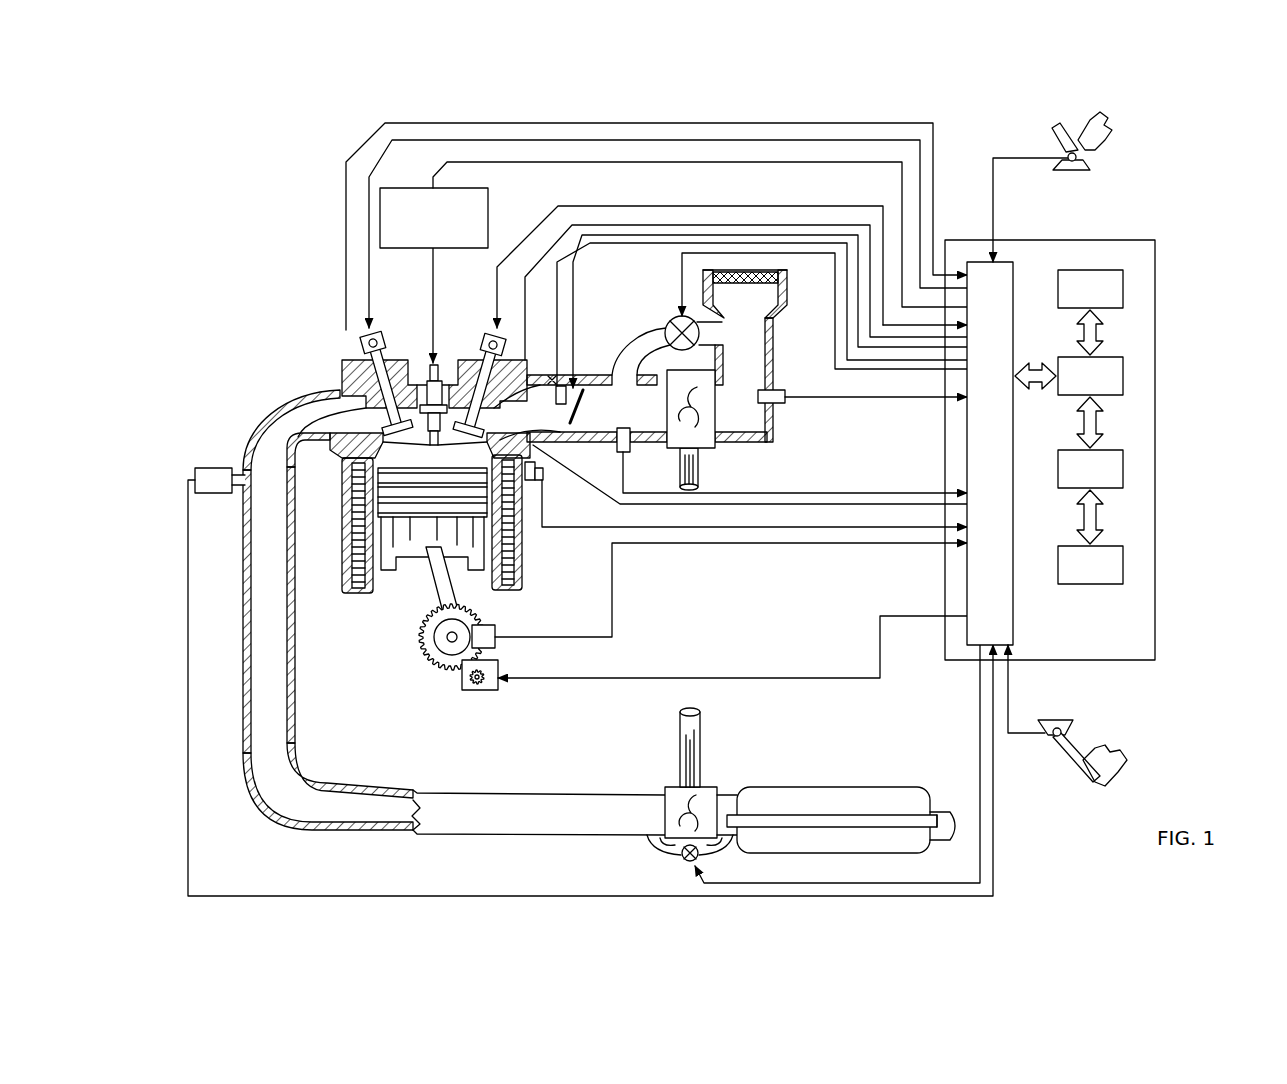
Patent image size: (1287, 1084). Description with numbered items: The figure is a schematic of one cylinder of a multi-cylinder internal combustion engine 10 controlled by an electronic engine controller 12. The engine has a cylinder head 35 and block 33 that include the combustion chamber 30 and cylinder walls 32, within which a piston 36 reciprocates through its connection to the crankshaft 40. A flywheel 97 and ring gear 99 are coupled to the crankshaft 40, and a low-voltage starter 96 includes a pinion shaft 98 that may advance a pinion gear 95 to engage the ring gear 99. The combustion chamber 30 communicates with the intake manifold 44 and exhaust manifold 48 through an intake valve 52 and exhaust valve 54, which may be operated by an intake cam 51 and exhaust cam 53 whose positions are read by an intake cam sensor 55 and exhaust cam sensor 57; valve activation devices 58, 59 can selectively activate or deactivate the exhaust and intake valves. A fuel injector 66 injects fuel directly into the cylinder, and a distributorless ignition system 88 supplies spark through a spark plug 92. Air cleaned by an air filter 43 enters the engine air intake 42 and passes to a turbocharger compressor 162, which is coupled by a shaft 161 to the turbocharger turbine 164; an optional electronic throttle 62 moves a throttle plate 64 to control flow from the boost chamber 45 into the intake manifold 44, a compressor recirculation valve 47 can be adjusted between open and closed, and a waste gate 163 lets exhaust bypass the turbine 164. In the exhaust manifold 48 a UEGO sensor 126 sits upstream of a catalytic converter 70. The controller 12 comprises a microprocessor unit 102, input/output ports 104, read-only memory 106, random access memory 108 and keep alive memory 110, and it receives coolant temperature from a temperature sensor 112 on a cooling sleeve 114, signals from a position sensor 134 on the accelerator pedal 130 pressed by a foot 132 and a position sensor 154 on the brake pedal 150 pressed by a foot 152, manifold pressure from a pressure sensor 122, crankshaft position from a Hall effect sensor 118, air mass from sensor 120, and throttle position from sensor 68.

The internal combustion engine 10 is at (282, 318).
The electronic engine controller 12 is at (1145, 240).
The combustion chamber 30 is at (432, 450).
The cylinder walls 32 is at (378, 573).
The block 33 is at (337, 488).
The cylinder head 35 is at (337, 357).
The piston 36 is at (418, 543).
The crankshaft 40 is at (433, 663).
The engine air intake 42 is at (628, 288).
The air filter 43 is at (752, 288).
The intake manifold 44 is at (539, 413).
The boost chamber 45 is at (633, 411).
The compressor recirculation valve 47 is at (676, 318).
The exhaust manifold 48 is at (454, 612).
The intake cam 51 is at (488, 335).
The intake valve 52 is at (478, 422).
The exhaust cam 53 is at (382, 335).
The exhaust valve 54 is at (378, 417).
The intake cam sensor 55 is at (510, 350).
The exhaust cam sensor 57 is at (362, 338).
The valve activation device 58 is at (385, 342).
The valve activation device 59 is at (485, 350).
The electronic throttle 62 is at (583, 405).
The throttle plate 64 is at (583, 418).
The fuel injector 66 is at (538, 482).
The throttle position sensor 68 is at (550, 382).
The catalytic converter 70 is at (772, 787).
The distributorless ignition system 88 is at (394, 188).
The spark plug 92 is at (445, 375).
The pinion gear 95 is at (483, 690).
The starter 96 is at (492, 690).
The flywheel 97 is at (428, 635).
The pinion shaft 98 is at (477, 687).
The ring gear 99 is at (447, 677).
The microprocessor unit 102 is at (1123, 380).
The input/output ports 104 is at (1017, 267).
The read-only memory 106 is at (1123, 295).
The random access memory 108 is at (1123, 468).
The keep alive memory 110 is at (1123, 566).
The temperature sensor 112 is at (753, 503).
The cooling sleeve 114 is at (513, 548).
The Hall effect sensor 118 is at (497, 628).
The air mass sensor 120 is at (780, 390).
The pressure sensor 122 is at (617, 452).
The Universal Exhaust Gas Oxygen sensor 126 is at (195, 470).
The accelerator pedal 130 is at (1050, 145).
The foot 132 is at (1105, 130).
The position sensor 134 is at (1080, 158).
The brake pedal 150 is at (1075, 775).
The foot 152 is at (1110, 745).
The position sensor 154 is at (1045, 733).
The shaft 161 is at (700, 757).
The turbocharger compressor 162 is at (703, 440).
The waste gate 163 is at (682, 868).
The turbocharger turbine 164 is at (670, 787).